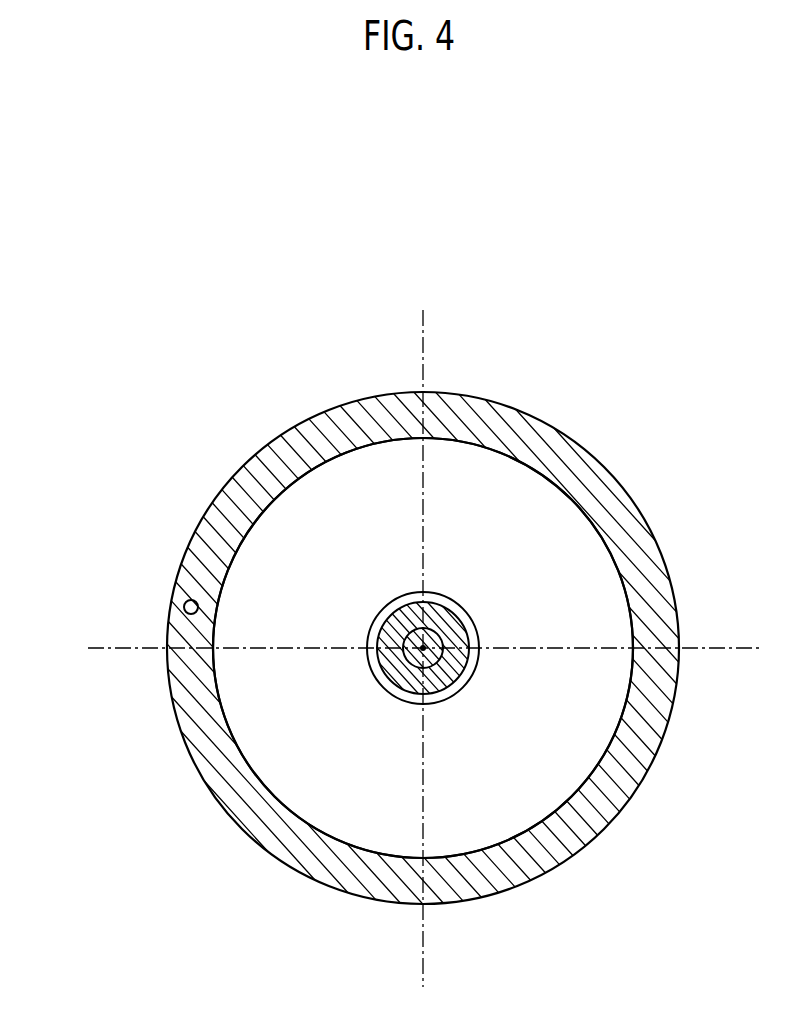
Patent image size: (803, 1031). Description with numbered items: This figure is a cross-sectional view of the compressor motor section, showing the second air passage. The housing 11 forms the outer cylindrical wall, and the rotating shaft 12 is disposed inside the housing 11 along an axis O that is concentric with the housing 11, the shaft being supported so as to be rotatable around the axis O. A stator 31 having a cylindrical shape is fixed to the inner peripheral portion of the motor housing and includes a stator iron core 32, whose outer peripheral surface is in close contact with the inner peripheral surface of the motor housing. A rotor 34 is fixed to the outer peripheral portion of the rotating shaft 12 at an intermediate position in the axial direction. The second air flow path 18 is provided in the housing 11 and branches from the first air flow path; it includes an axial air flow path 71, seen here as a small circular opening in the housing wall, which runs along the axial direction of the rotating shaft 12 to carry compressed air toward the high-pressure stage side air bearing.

The housing 11 is at (345, 403).
The rotating shaft 12 is at (438, 633).
The second air flow path 18 is at (184, 602).
The stator 31 is at (574, 801).
The stator iron core 32 is at (463, 503).
The rotor 34 is at (470, 668).
The axial air flow path 71 is at (115, 590).
The axis O is at (432, 649).